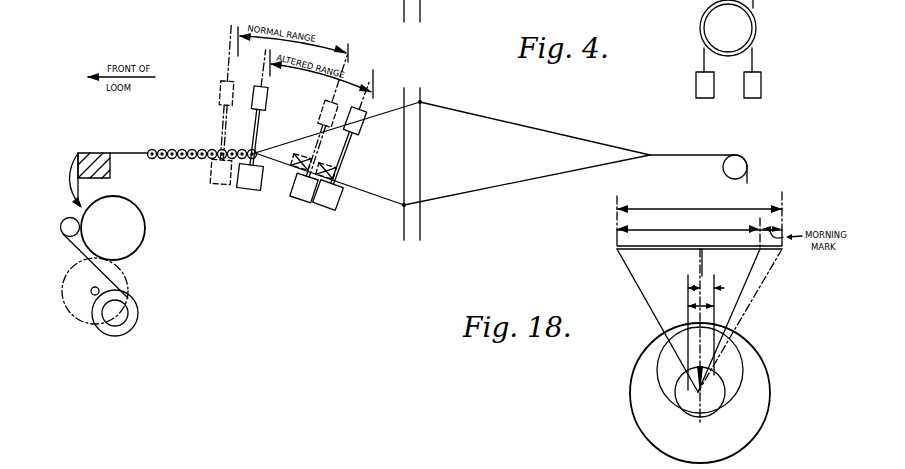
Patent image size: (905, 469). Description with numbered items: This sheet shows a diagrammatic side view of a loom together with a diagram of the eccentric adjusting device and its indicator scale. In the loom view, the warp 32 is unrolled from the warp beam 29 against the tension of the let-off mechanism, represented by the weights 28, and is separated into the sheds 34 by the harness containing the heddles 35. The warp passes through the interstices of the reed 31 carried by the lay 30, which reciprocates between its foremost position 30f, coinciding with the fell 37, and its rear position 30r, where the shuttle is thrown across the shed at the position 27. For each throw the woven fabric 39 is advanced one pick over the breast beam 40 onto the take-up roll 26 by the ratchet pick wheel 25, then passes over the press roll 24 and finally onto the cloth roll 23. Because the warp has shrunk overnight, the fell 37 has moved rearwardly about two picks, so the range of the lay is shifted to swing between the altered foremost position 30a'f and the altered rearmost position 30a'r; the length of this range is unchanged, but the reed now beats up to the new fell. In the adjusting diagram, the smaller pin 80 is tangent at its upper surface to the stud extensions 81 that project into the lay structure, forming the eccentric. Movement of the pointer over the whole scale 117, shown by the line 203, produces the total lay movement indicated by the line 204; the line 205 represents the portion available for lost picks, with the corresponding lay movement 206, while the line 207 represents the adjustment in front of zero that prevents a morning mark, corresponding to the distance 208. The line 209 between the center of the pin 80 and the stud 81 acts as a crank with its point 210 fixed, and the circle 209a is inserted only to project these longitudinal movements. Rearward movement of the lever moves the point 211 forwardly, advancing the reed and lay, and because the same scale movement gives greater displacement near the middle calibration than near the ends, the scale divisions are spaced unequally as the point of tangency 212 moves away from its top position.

In FIG. 4, the cloth roll 23 is at (124, 318).
In FIG. 4, the press roll 24 is at (80, 226).
In FIG. 4, the ratchet pick wheel 25 is at (122, 274).
In FIG. 4, the take-up roll 26 is at (145, 229).
In FIG. 4, the shuttle throwing position 27 is at (320, 154).
In FIG. 4, the weights 28 is at (748, 81).
In FIG. 4, the warp beam 29 is at (706, 13).
In FIG. 4, the lay 30 is at (268, 94).
In FIG. 4, the foremost position of the lay 30f is at (212, 110).
In FIG. 4, the rear position of the lay 30r is at (315, 139).
In FIG. 4, the altered foremost position of the lay 30a'f is at (245, 205).
In FIG. 4, the altered rearmost position of the lay 30a'r is at (333, 211).
In FIG. 4, the reed 31 is at (233, 122).
In FIG. 4, the warp 32 is at (686, 153).
In FIG. 4, the sheds 34 is at (513, 183).
In FIG. 4, the heddles 35 is at (406, 94).
In FIG. 4, the fell 37 is at (256, 150).
In FIG. 4, the woven fabric 39 is at (100, 238).
In FIG. 4, the breast beam 40 is at (82, 153).
In FIG. 18, the smaller pin 80 is at (735, 365).
In FIG. 18, the stud extensions 81 is at (752, 420).
In FIG. 18, the scale 117 is at (654, 250).
In FIG. 18, the total scale range line 203 is at (761, 207).
In FIG. 18, the total lay movement line 204 is at (699, 309).
In FIG. 18, the lost-pick range line 205 is at (681, 231).
In FIG. 18, the lost-pick lay movement 206 is at (703, 286).
In FIG. 18, the morning-mark range line 207 is at (784, 228).
In FIG. 18, the morning-mark lay distance 208 is at (717, 278).
In FIG. 18, the crank line 209 is at (693, 383).
In FIG. 18, the projection circle 209a is at (712, 415).
In FIG. 18, the crank center point 210 is at (660, 357).
In FIG. 18, the movable crank point 211 is at (700, 407).
In FIG. 18, the point of tangency 212 is at (732, 312).